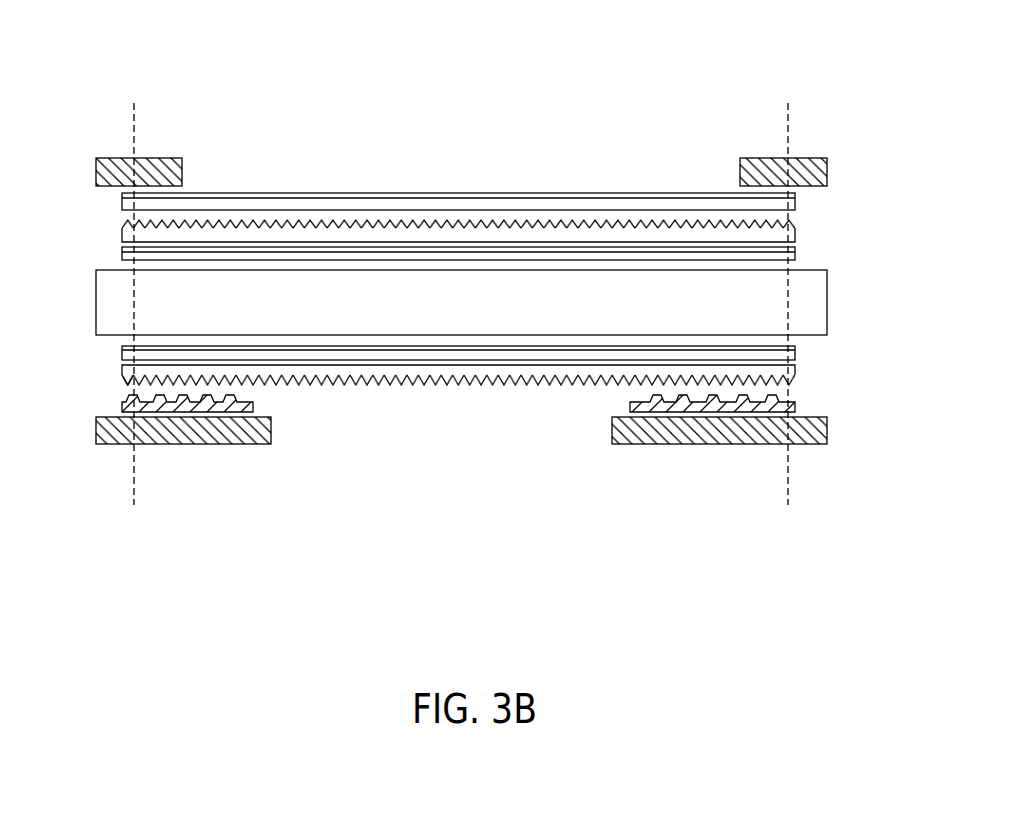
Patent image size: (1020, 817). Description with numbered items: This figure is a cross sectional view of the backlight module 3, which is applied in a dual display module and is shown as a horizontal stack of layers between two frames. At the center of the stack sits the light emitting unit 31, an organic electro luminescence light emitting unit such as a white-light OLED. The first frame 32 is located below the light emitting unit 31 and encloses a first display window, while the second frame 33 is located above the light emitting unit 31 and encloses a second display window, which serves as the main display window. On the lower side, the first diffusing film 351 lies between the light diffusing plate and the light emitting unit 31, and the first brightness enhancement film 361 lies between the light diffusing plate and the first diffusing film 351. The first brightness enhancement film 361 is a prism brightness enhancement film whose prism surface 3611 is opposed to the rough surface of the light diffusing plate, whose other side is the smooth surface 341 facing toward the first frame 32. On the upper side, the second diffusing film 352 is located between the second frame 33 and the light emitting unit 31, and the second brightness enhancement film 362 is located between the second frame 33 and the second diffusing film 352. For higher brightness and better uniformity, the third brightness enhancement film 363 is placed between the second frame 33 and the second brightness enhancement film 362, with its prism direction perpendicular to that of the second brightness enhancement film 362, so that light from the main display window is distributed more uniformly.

The backlight module 3 is at (772, 37).
The light emitting unit 31 is at (827, 289).
The first frame 32 is at (813, 444).
The second frame 33 is at (817, 158).
The smooth surface 341 is at (795, 413).
The first diffusing film 351 is at (795, 356).
The second diffusing film 352 is at (795, 254).
The first brightness enhancement film 361 is at (795, 377).
The prism surface 3611 is at (127, 382).
The second brightness enhancement film 362 is at (795, 236).
The third brightness enhancement film 363 is at (795, 207).